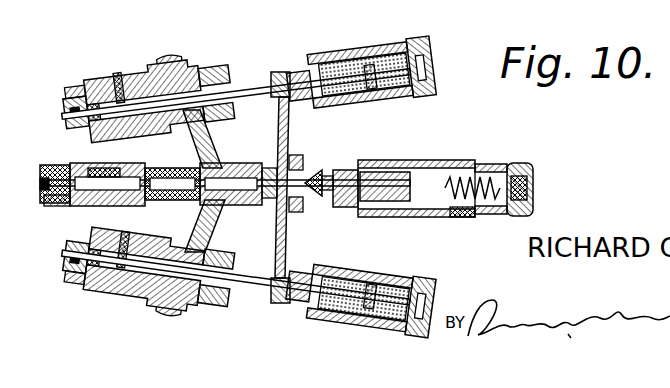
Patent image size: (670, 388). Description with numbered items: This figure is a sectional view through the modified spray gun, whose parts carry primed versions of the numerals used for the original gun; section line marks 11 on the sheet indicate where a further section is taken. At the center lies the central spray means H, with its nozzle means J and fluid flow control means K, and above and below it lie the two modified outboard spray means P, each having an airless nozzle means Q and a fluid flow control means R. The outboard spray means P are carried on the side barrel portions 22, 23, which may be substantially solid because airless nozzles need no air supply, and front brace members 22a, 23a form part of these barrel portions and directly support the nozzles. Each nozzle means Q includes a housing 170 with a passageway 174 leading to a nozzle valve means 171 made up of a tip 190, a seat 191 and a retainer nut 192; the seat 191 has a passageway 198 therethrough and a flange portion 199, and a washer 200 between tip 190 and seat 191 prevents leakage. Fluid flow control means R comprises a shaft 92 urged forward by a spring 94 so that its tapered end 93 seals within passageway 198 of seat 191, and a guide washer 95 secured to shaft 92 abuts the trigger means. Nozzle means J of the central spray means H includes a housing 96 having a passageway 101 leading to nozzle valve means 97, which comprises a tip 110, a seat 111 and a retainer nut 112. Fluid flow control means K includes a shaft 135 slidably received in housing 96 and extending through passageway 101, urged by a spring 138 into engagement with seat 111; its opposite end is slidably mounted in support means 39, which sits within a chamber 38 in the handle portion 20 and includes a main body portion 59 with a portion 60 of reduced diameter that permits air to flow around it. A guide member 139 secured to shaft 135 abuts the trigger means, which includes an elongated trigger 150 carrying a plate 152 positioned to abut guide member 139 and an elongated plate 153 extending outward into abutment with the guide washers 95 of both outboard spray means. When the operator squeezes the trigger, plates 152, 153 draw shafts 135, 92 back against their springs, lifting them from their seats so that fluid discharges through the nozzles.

The section line 11- 11 is at (44, 123).
The handle portion 20 is at (412, 163).
The side barrel portion 22 is at (373, 52).
The front brace member 22a is at (205, 139).
The side barrel portion 23 is at (370, 278).
The front brace member 23a is at (207, 240).
The chamber 38 is at (462, 161).
The support means 39 is at (522, 166).
The main body portion 59 is at (462, 217).
The portion of reduced diameter 60 is at (375, 212).
The shaft 92 is at (262, 88).
The needle-like pointed portion 93 is at (125, 75).
The spring 94 is at (347, 56).
The guide washer 95 is at (286, 77).
The housing 96 is at (141, 175).
The nozzle valve means 97 is at (37, 170).
The passageway 101 is at (98, 175).
The tip 110 is at (40, 184).
The seat 111 is at (80, 172).
The retainer nut 112 is at (54, 205).
The shaft 135 is at (266, 172).
The spring 138 is at (533, 184).
The guide member 139 is at (328, 207).
The trigger 150 is at (297, 214).
The plate 152 is at (320, 165).
The elongated plate 153 is at (286, 120).
The housing 170 is at (168, 76).
The nozzle valve means 171 is at (76, 78).
The passageway 174 is at (163, 76).
The tip 190 is at (67, 284).
The seat 191 is at (119, 80).
The retainer nut 192 is at (110, 228).
The passageway 198 is at (105, 294).
The flange portion 199 is at (90, 293).
The washer 200 is at (92, 78).
The nozzle means Q is at (80, 42).
The modified outboard spray means P is at (196, 46).
The fluid flow control means R is at (266, 60).
The nozzle means J is at (47, 152).
The fluid flow control means K is at (330, 148).
The central spray means H is at (400, 150).